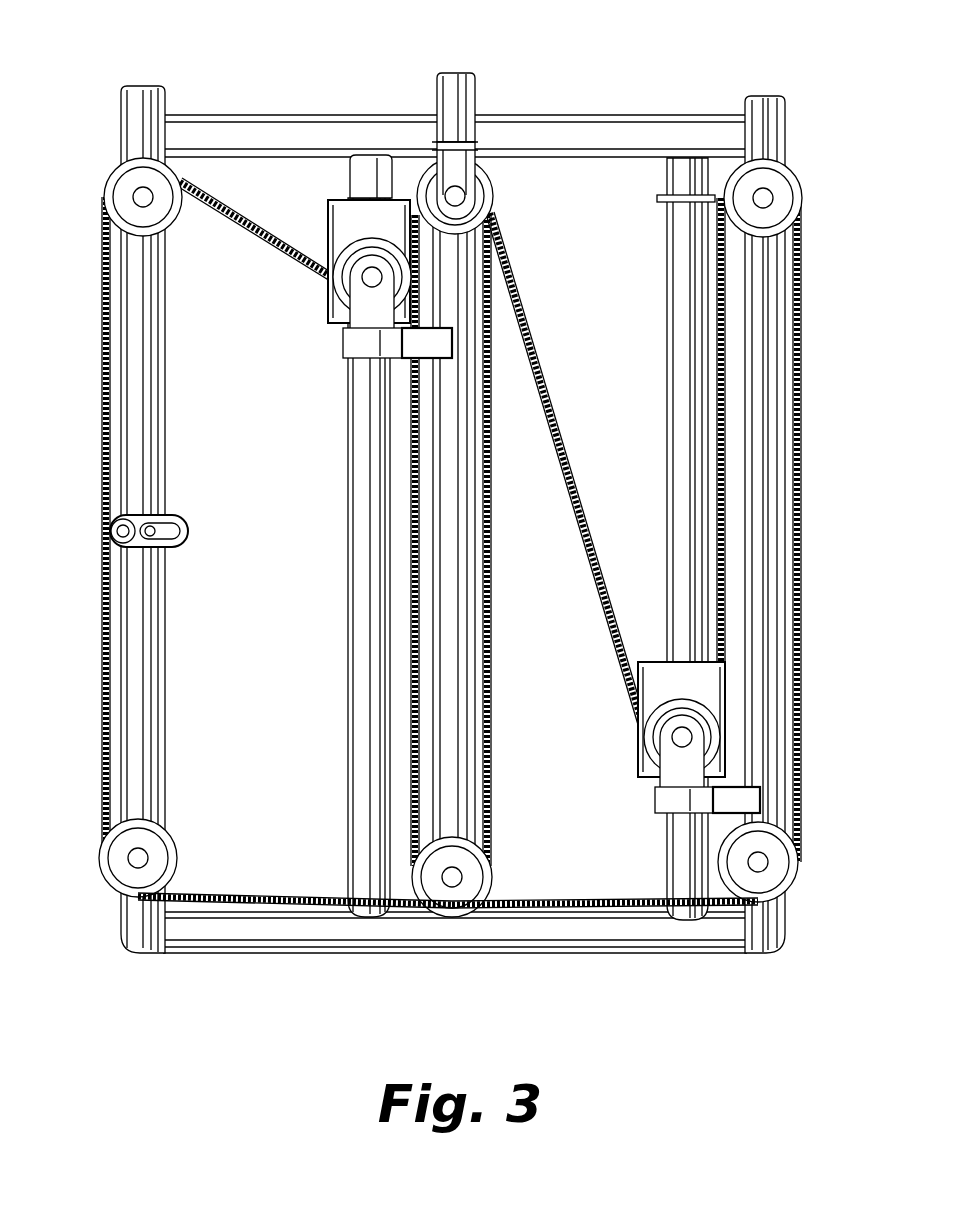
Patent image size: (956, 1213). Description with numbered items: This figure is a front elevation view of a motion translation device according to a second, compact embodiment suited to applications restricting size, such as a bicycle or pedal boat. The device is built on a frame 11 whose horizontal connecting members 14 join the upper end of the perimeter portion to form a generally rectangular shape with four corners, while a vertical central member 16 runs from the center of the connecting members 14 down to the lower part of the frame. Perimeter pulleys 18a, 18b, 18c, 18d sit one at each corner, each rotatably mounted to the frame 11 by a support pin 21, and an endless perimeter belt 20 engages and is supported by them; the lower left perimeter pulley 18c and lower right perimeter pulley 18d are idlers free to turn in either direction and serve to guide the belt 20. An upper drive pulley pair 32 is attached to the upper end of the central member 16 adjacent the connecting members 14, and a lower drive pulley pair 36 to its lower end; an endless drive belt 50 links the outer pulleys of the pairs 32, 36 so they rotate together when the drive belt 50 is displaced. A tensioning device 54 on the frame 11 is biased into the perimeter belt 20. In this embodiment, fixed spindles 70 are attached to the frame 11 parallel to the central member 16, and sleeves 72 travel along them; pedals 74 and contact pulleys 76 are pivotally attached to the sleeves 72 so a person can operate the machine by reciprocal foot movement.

The frame 11 is at (137, 103).
The horizontal connecting members 14 is at (183, 130).
The vertical central member 16 is at (445, 100).
The perimeter pulley 18a is at (118, 183).
The perimeter pulley 18b is at (785, 183).
The lower left perimeter pulley 18c is at (115, 868).
The lower right perimeter pulley 18d is at (778, 875).
The endless perimeter belt 20 is at (102, 600).
The support pin 21 is at (462, 882).
The upper drive pulley pair 32 is at (492, 180).
The lower drive pulley pair 36 is at (440, 895).
The endless drive belt 50 is at (411, 483).
The tensioning device 54 is at (190, 512).
The fixed spindles 70 is at (672, 298).
The sleeves 72 is at (330, 215).
The pedals 74 is at (420, 345).
The contact pulleys 76 is at (345, 265).